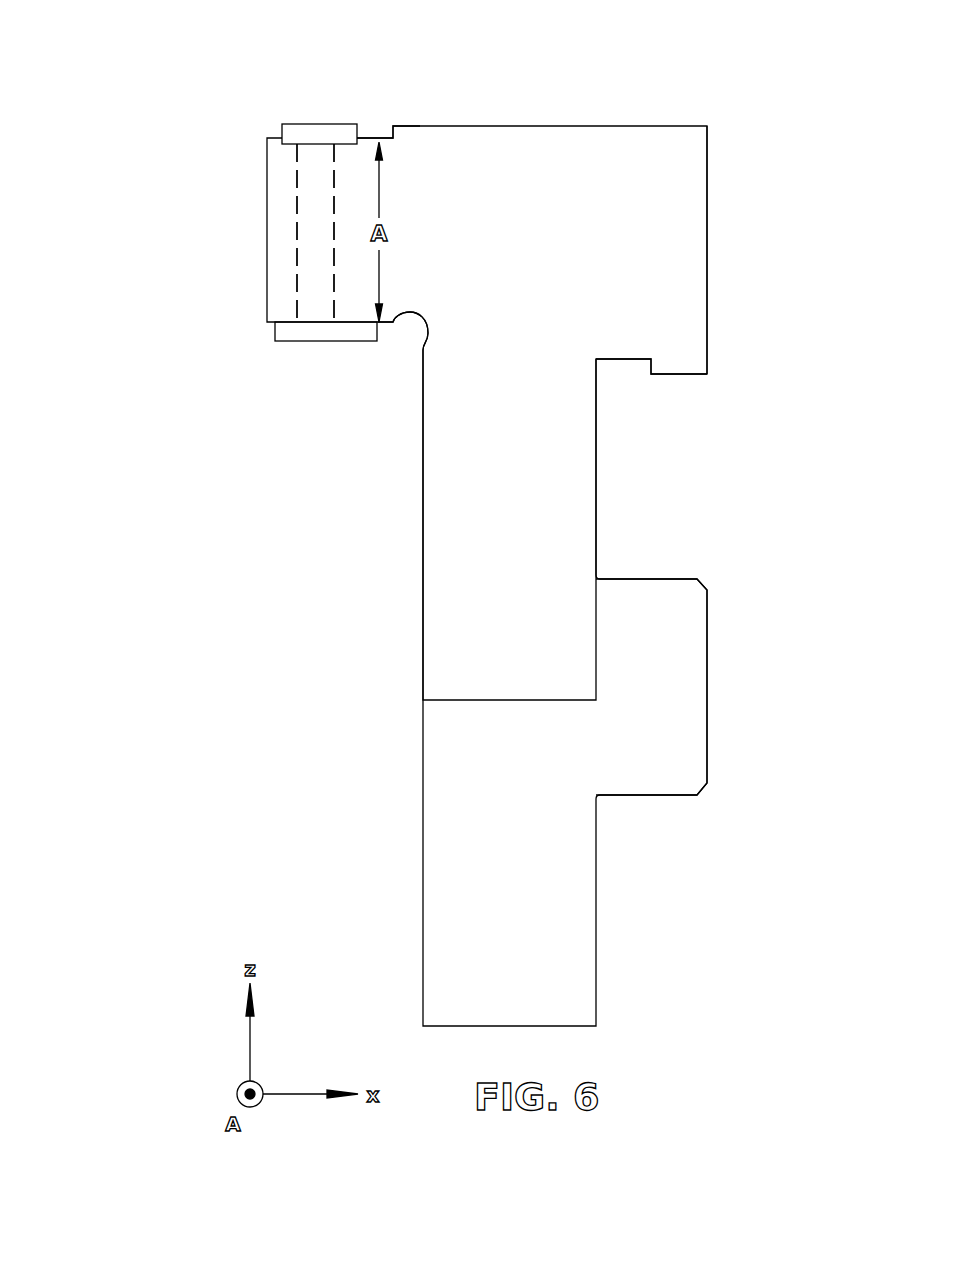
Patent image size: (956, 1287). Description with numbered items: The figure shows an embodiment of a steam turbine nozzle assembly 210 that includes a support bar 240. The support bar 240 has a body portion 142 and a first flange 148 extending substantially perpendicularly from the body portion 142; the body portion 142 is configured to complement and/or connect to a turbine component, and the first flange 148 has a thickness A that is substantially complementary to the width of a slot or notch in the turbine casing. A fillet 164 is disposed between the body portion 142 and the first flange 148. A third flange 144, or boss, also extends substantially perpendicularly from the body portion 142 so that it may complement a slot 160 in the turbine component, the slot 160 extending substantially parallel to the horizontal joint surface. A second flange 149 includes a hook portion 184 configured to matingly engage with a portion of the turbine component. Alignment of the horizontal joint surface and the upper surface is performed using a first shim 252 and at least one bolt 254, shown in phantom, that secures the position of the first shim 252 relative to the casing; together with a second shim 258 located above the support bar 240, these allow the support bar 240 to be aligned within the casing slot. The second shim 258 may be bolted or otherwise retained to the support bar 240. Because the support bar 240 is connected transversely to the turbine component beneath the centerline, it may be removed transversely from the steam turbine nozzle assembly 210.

The steam turbine nozzle assembly 210 is at (139, 97).
The body portion 142 is at (532, 618).
The support bar 240 is at (532, 383).
The third flange 144 is at (707, 678).
The first flange 148 is at (278, 268).
The second flange 149 is at (707, 168).
The slot 160 is at (371, 110).
The fillet 164 is at (404, 352).
The hook portion 184 is at (651, 368).
The first shim 252 is at (325, 341).
The bolt 254 is at (297, 230).
The second shim 258 is at (318, 124).